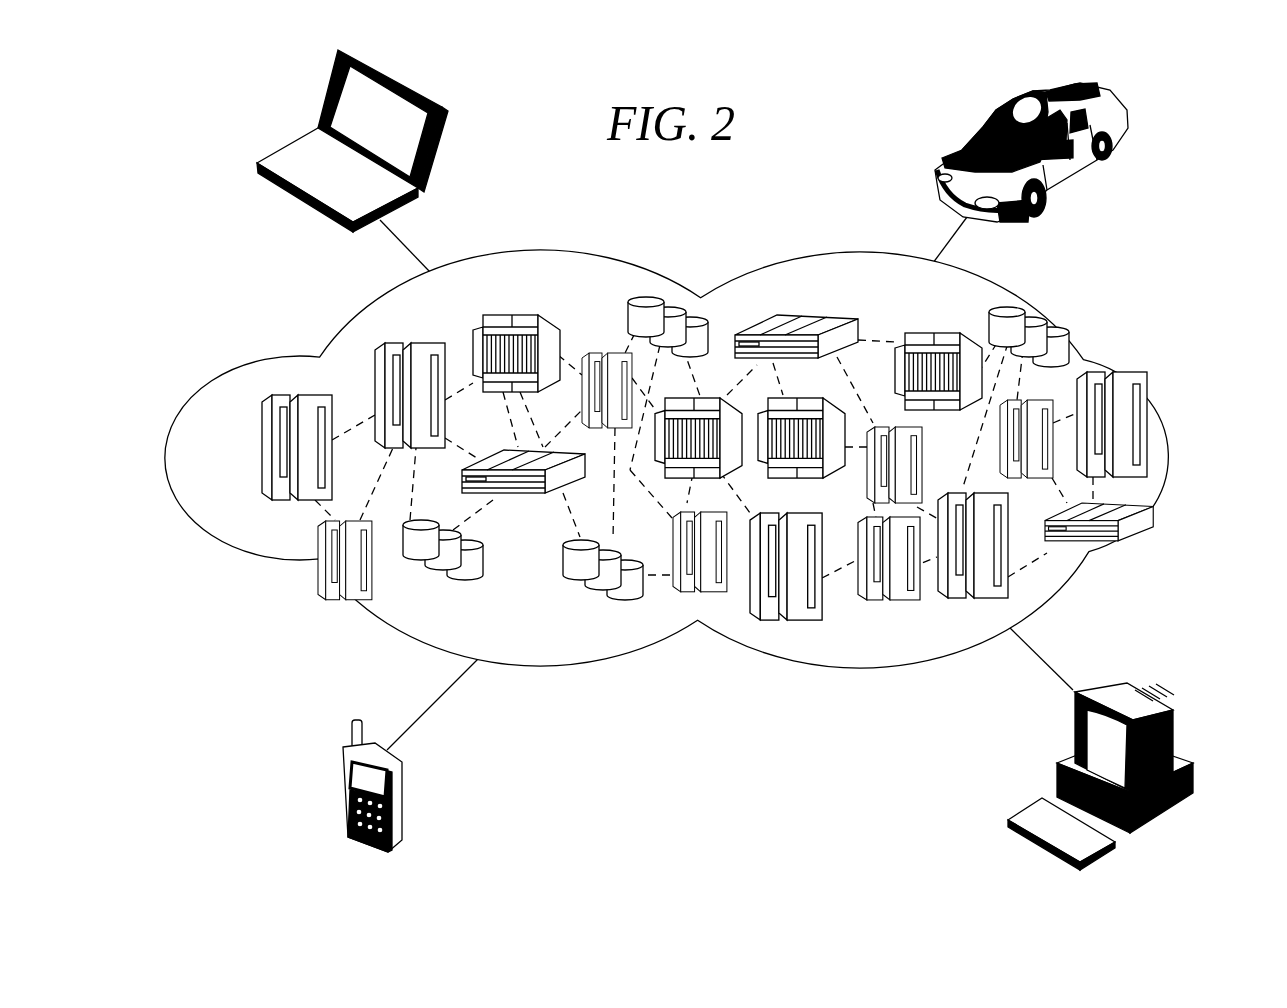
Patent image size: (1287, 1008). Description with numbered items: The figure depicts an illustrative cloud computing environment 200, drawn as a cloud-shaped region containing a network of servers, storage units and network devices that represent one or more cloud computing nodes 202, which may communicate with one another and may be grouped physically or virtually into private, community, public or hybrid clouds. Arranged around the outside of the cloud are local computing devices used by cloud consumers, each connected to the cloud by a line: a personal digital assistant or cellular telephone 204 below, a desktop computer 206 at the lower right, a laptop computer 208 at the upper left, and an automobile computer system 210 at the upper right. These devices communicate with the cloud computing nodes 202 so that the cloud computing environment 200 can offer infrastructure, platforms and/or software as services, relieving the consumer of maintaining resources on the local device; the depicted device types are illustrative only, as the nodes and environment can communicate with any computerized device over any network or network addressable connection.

The cloud computing environment 200 is at (1179, 368).
The cloud computing nodes 202 is at (1137, 540).
The cellular telephone 204 is at (402, 763).
The desktop computer 206 is at (1063, 758).
The laptop computer 208 is at (300, 137).
The automobile computer system 210 is at (955, 148).